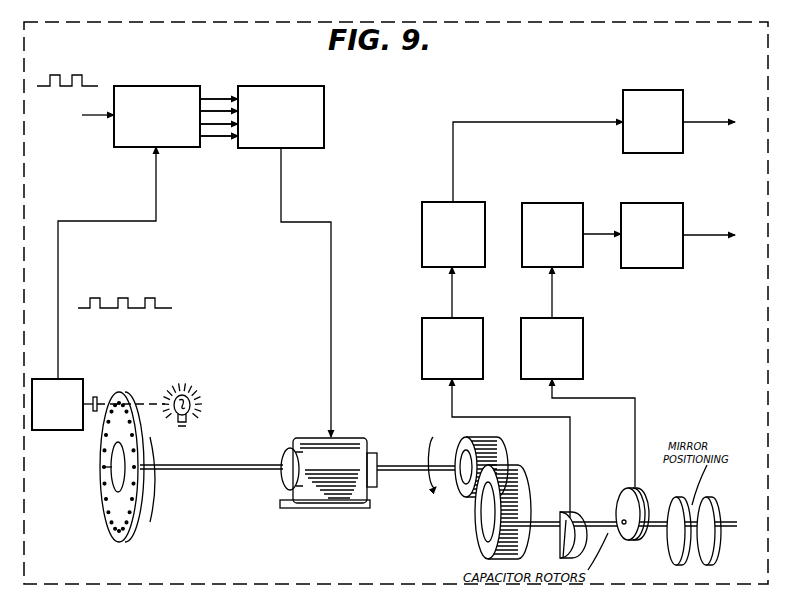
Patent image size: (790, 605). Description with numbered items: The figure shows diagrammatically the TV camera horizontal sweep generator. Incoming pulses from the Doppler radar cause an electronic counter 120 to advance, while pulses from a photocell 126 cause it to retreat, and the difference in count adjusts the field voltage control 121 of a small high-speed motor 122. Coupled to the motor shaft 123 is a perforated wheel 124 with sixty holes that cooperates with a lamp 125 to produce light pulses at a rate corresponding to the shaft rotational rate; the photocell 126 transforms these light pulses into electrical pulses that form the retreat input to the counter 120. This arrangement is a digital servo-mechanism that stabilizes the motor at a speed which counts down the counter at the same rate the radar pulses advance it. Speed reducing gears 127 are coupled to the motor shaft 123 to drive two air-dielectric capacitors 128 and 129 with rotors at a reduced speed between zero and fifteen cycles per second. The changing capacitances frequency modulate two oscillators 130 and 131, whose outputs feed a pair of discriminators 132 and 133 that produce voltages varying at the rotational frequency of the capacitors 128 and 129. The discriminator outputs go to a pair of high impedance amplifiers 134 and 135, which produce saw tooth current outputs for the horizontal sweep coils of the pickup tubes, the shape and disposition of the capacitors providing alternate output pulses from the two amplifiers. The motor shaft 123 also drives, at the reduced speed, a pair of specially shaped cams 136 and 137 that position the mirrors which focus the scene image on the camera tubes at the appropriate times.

The electronic counter 120 is at (165, 86).
The field voltage control 121 is at (258, 86).
The small high-speed motor 122 is at (325, 434).
The motor shaft 123 is at (209, 470).
The perforated wheel 124 is at (100, 473).
The lamp 125 is at (195, 395).
The photocell 126 is at (60, 379).
The speed reducing gears 127 is at (478, 503).
The air-dielectric capacitor 128 is at (560, 538).
The air-dielectric capacitor 129 is at (640, 490).
The oscillator 130 is at (450, 318).
The oscillator 131 is at (583, 335).
The discriminator 132 is at (437, 202).
The discriminator 133 is at (550, 203).
The high impedance amplifier 134 is at (642, 90).
The high impedance amplifier 135 is at (660, 203).
The specially shaped cam 136 is at (665, 548).
The specially shaped cam 137 is at (715, 497).